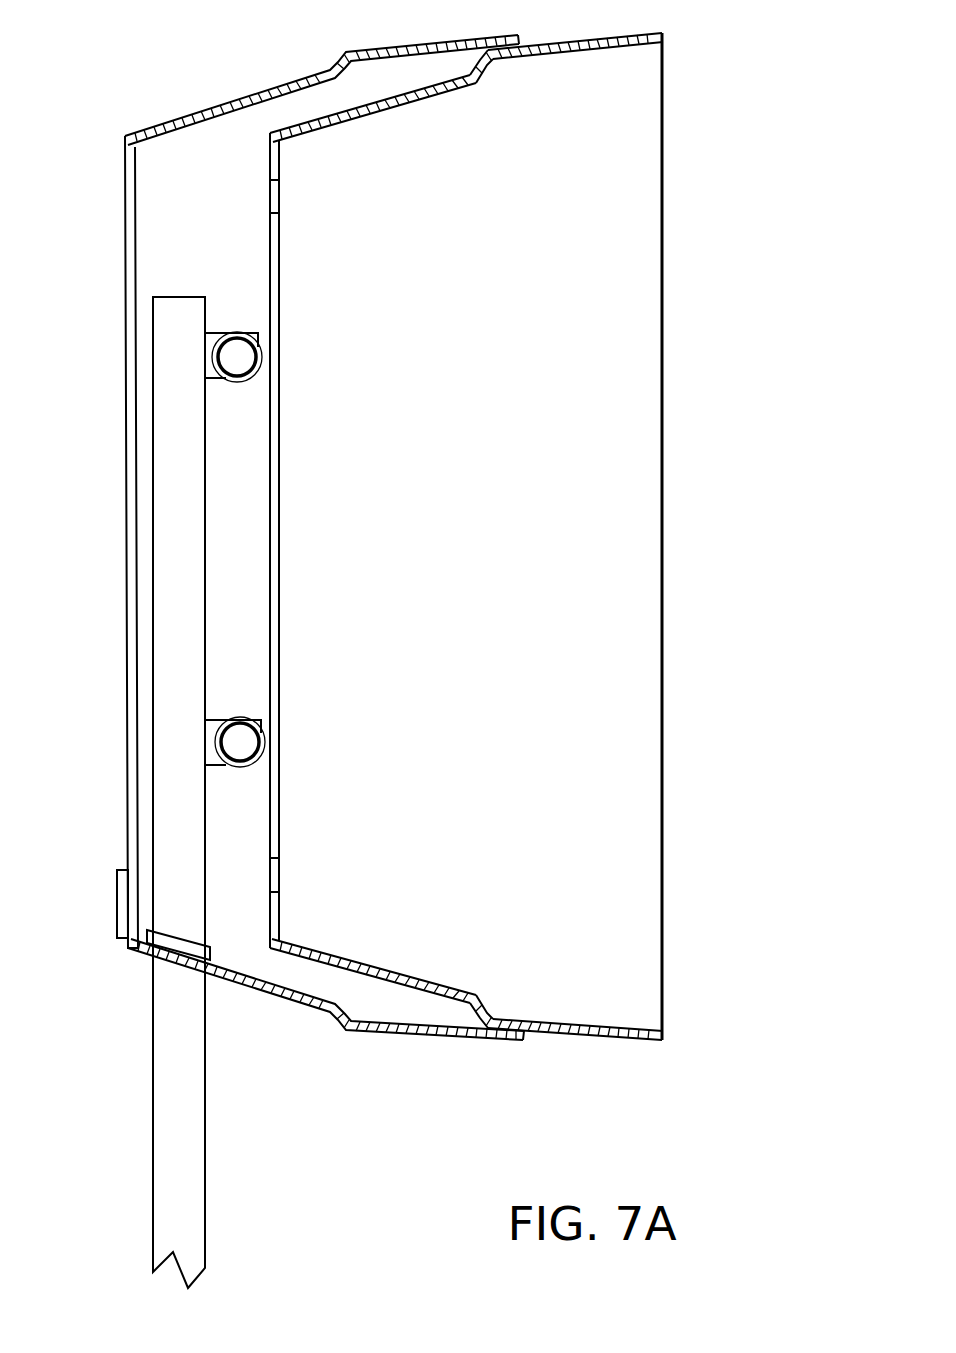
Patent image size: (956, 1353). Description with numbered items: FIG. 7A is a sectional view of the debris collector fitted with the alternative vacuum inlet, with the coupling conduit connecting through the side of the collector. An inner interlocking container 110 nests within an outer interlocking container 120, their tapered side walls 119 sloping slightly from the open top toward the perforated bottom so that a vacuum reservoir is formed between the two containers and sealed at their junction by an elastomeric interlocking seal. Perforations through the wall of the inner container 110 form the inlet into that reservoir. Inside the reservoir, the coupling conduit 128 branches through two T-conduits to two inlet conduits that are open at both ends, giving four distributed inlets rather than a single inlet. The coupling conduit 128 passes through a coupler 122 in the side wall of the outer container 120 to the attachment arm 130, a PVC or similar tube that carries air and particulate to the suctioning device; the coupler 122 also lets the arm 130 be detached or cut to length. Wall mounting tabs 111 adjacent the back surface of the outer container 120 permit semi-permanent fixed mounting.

The interlocking container 110 is at (443, 511).
The wall mounting tab 111 is at (117, 892).
The side wall 119 is at (572, 45).
The interlocking container 120 is at (127, 426).
The coupler 122 is at (141, 948).
The coupling conduit 128 is at (160, 640).
The attachment arm 130 is at (168, 1068).